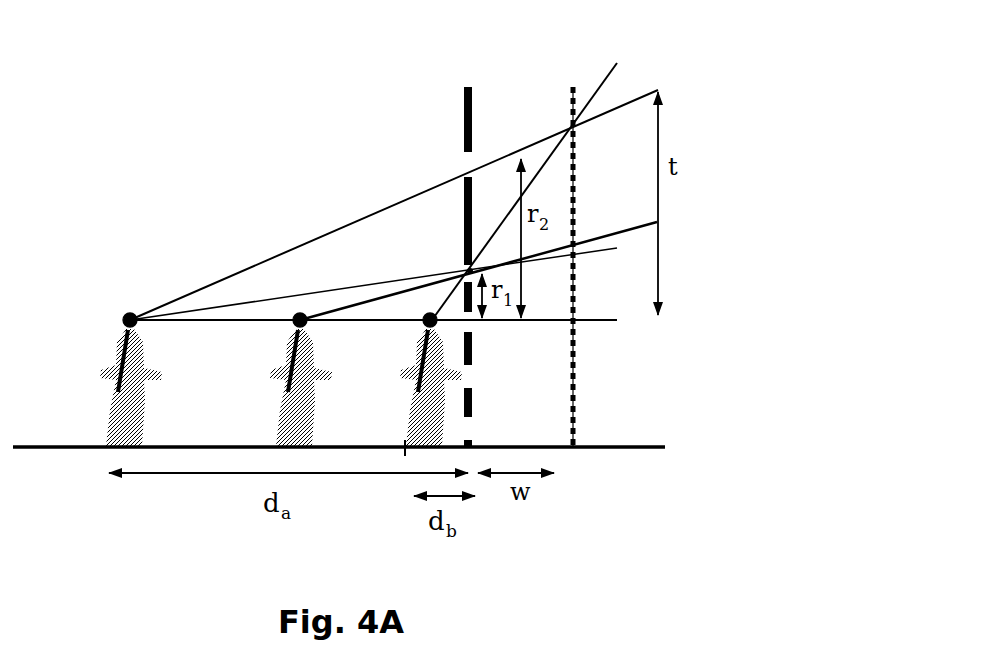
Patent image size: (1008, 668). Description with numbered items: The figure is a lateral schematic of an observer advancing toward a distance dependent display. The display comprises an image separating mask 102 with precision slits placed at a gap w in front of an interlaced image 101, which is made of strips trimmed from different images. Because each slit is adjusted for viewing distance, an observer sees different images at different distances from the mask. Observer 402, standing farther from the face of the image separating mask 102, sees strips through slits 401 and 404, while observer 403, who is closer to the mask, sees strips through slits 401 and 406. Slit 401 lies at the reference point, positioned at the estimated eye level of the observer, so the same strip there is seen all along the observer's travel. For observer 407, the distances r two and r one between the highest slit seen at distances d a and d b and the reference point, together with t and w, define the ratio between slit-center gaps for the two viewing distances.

The interlaced image 101 is at (570, 86).
The image separating mask 102 is at (475, 85).
The slit 401 is at (480, 318).
The observer 402 is at (130, 308).
The observer 403 is at (297, 300).
The slit 404 is at (458, 158).
The slit 406 is at (460, 255).
The observer 407 is at (415, 312).